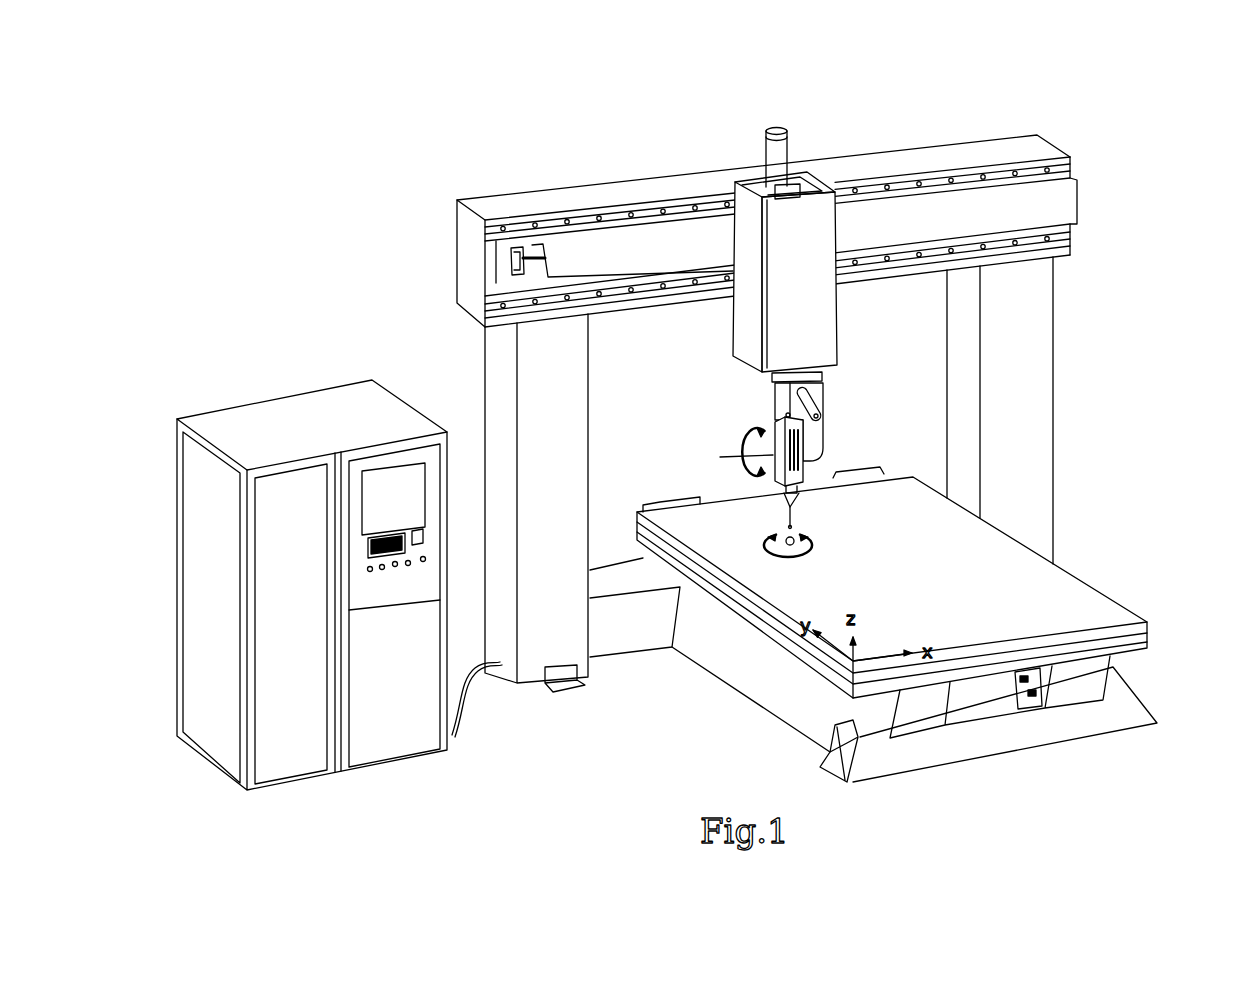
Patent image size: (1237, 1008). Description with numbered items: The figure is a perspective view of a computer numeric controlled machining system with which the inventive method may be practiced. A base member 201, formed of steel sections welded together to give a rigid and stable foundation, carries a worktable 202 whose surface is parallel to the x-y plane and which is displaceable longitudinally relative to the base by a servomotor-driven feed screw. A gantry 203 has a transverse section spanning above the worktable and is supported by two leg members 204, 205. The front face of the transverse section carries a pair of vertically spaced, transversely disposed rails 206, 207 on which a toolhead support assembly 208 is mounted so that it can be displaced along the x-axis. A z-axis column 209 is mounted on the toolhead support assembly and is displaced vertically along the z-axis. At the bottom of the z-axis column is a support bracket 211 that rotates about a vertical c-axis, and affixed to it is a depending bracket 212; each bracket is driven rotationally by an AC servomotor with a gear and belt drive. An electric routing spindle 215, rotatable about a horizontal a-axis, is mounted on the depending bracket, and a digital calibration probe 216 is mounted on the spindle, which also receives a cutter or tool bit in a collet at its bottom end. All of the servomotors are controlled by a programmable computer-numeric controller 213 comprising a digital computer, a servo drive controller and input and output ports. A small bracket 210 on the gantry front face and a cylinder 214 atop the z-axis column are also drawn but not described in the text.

The base member 201 is at (765, 687).
The worktable 202 is at (1107, 615).
The gantry 203 is at (1017, 150).
The leg member 204 is at (1033, 405).
The leg member 205 is at (493, 368).
The rail 206 is at (1070, 160).
The rail 207 is at (1070, 227).
The toolhead support assembly 208 is at (735, 228).
The z-axis column 209 is at (800, 234).
The sensor bracket 210 is at (535, 245).
The support bracket 211 is at (773, 385).
The depending bracket 212 is at (822, 403).
The programmable computer-numeric controller 213 is at (325, 417).
The balance cylinder 214 is at (770, 148).
The electric routing spindle 215 is at (800, 438).
The digital calibration probe 216 is at (812, 538).